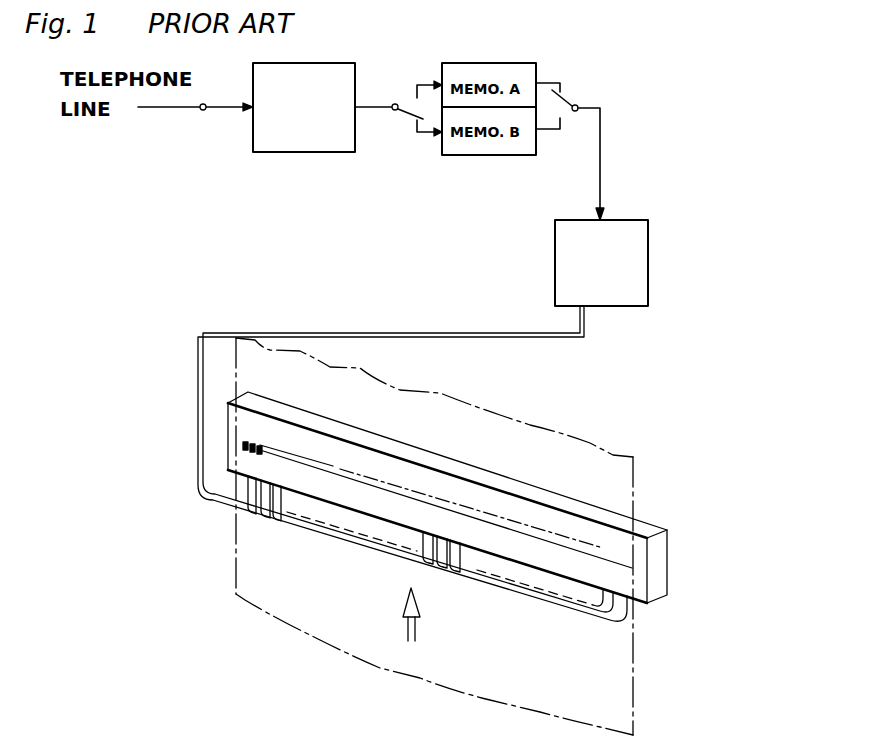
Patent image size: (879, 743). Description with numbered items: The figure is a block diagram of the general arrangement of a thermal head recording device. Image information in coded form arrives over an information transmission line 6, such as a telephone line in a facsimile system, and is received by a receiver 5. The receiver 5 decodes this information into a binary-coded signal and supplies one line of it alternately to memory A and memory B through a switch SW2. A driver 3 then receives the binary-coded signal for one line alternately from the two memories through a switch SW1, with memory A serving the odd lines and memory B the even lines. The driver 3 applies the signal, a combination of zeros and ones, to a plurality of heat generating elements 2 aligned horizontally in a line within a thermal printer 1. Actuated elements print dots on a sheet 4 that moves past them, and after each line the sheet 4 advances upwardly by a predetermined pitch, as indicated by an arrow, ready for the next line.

The thermal printer 1 is at (665, 537).
The heat generating elements 2 is at (243, 445).
The driver 3 is at (645, 272).
The sheet 4 is at (243, 568).
The receiver 5 is at (319, 152).
The information transmission line 6 is at (182, 109).
The switch SW1 is at (570, 100).
The switch SW2 is at (397, 102).